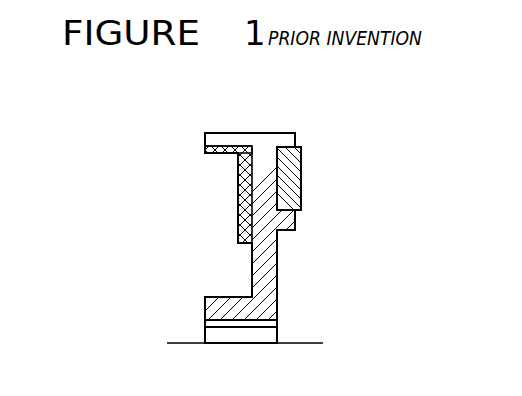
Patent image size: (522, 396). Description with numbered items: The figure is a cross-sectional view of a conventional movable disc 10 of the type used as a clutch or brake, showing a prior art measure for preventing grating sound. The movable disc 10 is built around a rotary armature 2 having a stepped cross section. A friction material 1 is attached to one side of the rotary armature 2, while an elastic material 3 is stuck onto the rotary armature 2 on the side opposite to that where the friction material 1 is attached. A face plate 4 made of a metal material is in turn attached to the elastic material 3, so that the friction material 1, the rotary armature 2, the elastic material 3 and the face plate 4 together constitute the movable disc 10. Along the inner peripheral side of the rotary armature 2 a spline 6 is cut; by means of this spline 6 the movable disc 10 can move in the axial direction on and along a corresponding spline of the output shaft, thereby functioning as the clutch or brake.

The friction material 1 is at (298, 180).
The rotary armature 2 is at (268, 145).
The elastic material 3 is at (226, 143).
The face plate 4 is at (217, 153).
The spline 6 is at (254, 327).
The movable disc 10 is at (288, 288).